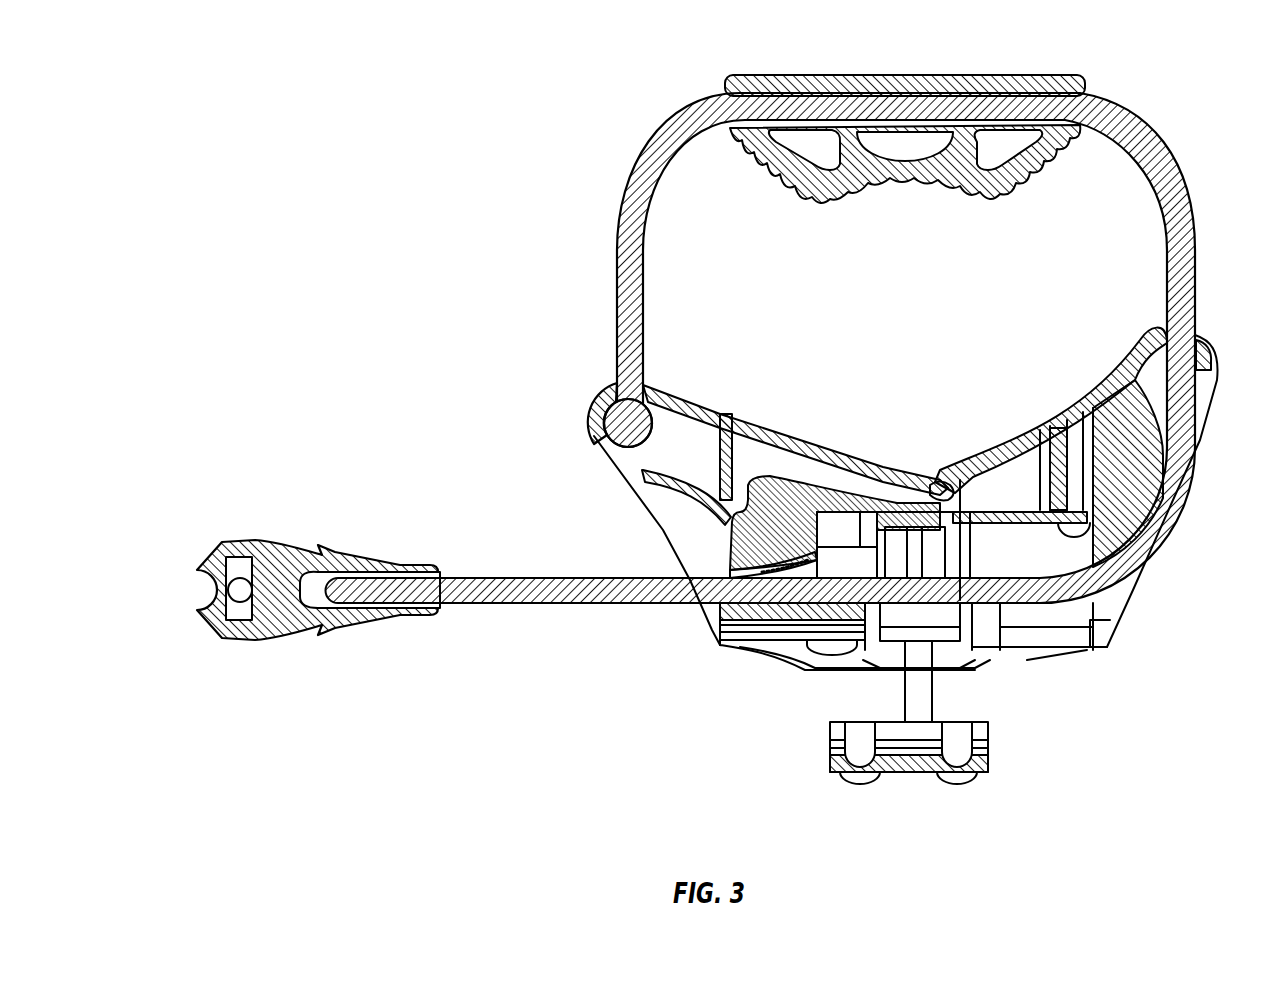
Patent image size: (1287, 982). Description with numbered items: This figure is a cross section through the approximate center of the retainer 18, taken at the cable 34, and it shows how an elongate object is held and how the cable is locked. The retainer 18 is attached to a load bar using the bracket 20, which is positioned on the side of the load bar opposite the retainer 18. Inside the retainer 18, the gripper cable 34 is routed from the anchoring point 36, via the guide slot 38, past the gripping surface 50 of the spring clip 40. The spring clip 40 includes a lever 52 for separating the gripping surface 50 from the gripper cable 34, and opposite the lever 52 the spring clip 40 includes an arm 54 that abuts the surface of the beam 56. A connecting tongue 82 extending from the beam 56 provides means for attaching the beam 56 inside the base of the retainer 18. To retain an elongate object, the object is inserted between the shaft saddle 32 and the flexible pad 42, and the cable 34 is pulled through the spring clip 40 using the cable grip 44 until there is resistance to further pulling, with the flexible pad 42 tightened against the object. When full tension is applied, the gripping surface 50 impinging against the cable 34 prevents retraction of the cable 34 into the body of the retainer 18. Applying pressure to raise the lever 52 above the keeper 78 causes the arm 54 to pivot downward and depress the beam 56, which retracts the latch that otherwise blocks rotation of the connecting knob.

The retainer 18 is at (546, 150).
The bracket 20 is at (996, 722).
The shaft saddle 32 is at (1020, 448).
The gripper cable 34 is at (682, 128).
The anchoring point 36 is at (598, 440).
The guide slot 38 is at (1206, 390).
The spring clip 40 is at (742, 600).
The flexible pad 42 is at (906, 78).
The cable grip 44 is at (268, 546).
The gripping surface 50 is at (771, 522).
The lever 52 is at (642, 486).
The arm 54 is at (827, 500).
The beam 56 is at (914, 478).
The keeper 78 is at (762, 640).
The connecting tongue 82 is at (992, 525).